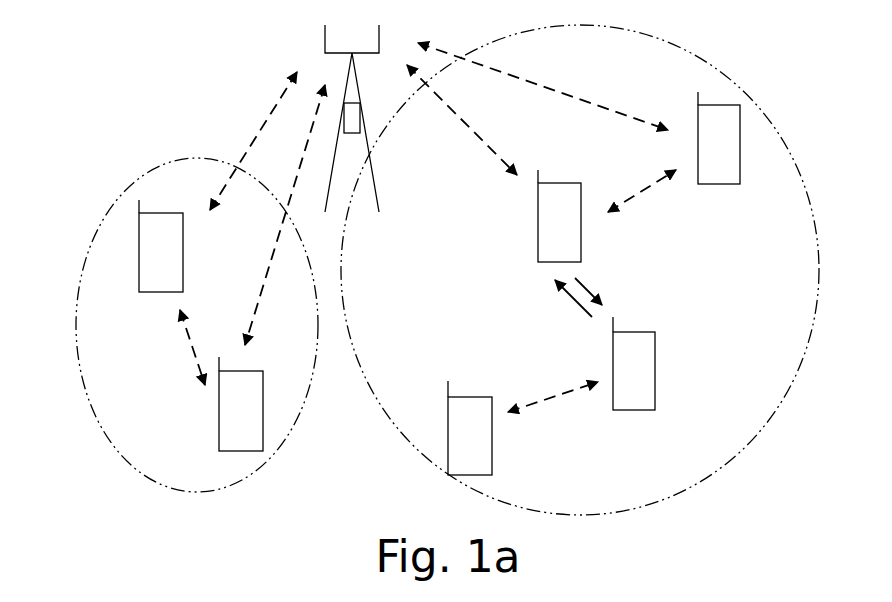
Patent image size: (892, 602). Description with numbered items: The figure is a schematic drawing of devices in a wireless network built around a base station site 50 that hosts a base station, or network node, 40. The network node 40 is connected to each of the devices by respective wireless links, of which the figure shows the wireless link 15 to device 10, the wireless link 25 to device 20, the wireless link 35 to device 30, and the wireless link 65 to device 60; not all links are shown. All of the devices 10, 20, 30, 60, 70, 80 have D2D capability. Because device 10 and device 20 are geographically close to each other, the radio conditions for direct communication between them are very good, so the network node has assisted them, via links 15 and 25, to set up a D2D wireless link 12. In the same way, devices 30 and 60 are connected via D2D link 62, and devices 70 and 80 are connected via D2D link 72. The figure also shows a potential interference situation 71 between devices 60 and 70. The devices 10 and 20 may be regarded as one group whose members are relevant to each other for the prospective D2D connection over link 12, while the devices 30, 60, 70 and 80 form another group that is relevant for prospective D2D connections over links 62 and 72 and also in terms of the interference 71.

The device 10 is at (161, 246).
The D2D wireless link 12 is at (180, 347).
The wireless link 15 is at (253, 141).
The device 20 is at (241, 404).
The wireless link 25 is at (285, 215).
The device 30 is at (719, 138).
The wireless link 35 is at (543, 86).
The base station 40 is at (360, 114).
The base station site 50 is at (384, 167).
The device 60 is at (559, 216).
The D2D link 62 is at (642, 197).
The wireless link 65 is at (462, 120).
The device 70 is at (634, 363).
The interference 71 is at (573, 303).
The D2D link 72 is at (553, 408).
The device 80 is at (470, 428).